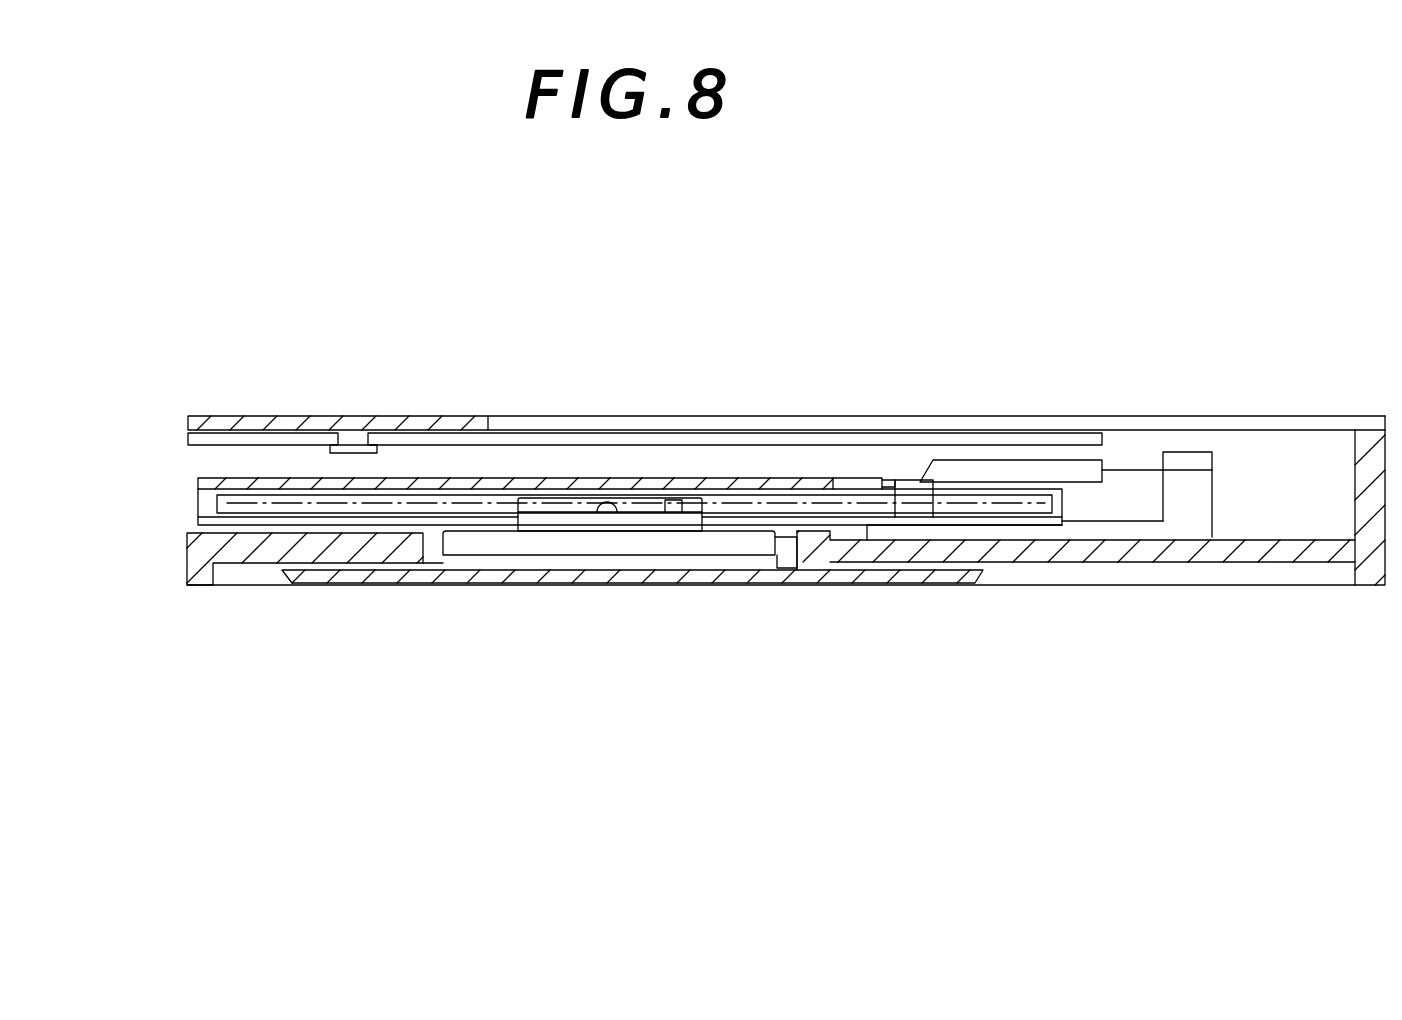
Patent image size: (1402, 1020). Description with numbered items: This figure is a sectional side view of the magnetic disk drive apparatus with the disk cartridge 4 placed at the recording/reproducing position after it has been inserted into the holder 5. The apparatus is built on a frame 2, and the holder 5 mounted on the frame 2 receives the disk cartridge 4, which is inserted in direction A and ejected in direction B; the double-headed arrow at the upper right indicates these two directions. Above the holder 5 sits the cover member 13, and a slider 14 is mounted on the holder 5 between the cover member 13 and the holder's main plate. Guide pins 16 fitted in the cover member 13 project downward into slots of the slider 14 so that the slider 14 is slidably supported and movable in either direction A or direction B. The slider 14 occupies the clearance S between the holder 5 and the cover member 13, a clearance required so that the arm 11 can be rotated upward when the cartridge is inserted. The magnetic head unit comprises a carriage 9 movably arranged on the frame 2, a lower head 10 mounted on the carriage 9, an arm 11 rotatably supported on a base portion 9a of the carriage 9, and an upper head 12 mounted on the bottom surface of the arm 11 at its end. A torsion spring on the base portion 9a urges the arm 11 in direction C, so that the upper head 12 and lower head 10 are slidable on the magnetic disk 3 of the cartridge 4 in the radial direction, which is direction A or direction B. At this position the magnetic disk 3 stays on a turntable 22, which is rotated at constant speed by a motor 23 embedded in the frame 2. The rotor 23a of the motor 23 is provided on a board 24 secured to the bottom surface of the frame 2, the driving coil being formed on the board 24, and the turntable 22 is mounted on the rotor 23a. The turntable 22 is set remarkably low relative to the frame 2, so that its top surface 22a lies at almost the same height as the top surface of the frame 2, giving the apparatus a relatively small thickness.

The frame 2 is at (200, 568).
The magnetic disk 3 is at (497, 503).
The disk cartridge 4 is at (217, 498).
The holder 5 is at (200, 482).
The carriage 9 is at (1047, 527).
The base portion 9a is at (1198, 506).
The lower head 10 is at (913, 510).
The arm 11 is at (993, 468).
The upper head 12 is at (915, 480).
The cover member 13 is at (455, 418).
The slider 14 is at (613, 437).
The guide pin 16 is at (351, 438).
The turntable 22 is at (623, 520).
The top surface 22a is at (560, 510).
The motor 23 is at (703, 543).
The rotor 23a is at (773, 535).
The board 24 is at (552, 577).
The clearance S is at (213, 452).
The direction C is at (946, 413).
The direction A is at (1082, 335).
The direction B is at (1082, 335).